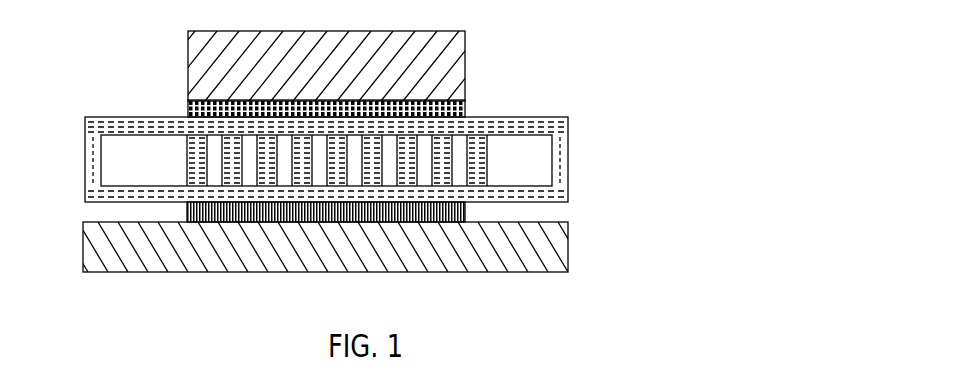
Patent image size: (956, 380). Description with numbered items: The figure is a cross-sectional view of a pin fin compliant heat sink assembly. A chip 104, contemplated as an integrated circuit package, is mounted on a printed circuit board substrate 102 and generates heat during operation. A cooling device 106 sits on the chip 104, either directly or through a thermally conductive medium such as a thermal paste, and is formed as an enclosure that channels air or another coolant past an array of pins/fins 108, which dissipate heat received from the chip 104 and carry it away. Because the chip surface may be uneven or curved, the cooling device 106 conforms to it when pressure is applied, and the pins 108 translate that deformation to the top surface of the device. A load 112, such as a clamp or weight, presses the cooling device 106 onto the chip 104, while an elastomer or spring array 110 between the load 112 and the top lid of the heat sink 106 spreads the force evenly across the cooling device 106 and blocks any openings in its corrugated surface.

The substrate 102 is at (568, 248).
The chip 104 is at (187, 207).
The cooling device 106 is at (568, 172).
The pins/fins 108 is at (477, 136).
The elastomer or spring array 110 is at (188, 110).
The load 112 is at (188, 52).